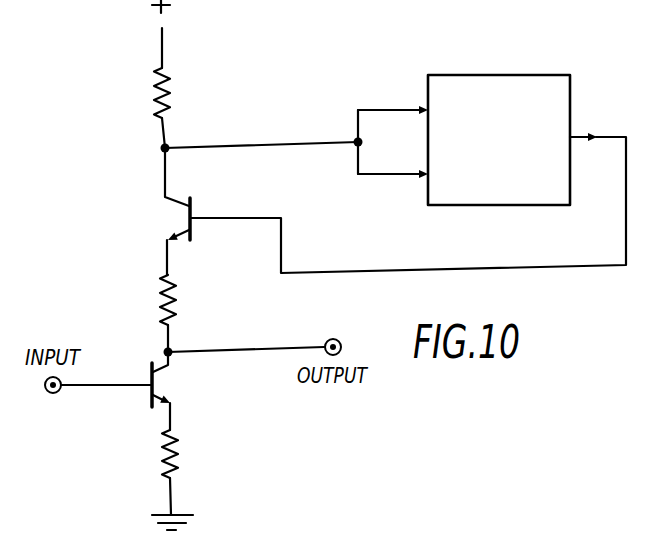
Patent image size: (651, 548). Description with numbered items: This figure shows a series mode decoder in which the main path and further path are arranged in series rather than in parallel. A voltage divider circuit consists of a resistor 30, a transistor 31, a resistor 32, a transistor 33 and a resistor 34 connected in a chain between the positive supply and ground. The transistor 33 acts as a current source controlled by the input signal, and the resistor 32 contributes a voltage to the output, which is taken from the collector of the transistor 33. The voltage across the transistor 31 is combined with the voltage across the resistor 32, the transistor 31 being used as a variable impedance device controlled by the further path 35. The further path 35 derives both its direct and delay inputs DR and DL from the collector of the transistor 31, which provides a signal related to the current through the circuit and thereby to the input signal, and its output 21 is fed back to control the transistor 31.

The resistor 30 is at (177, 92).
The transistor 31 is at (191, 203).
The resistor 32 is at (160, 301).
The transistor 33 is at (150, 365).
The resistor 34 is at (184, 453).
The further path 35 is at (518, 73).
The output 21 is at (616, 131).